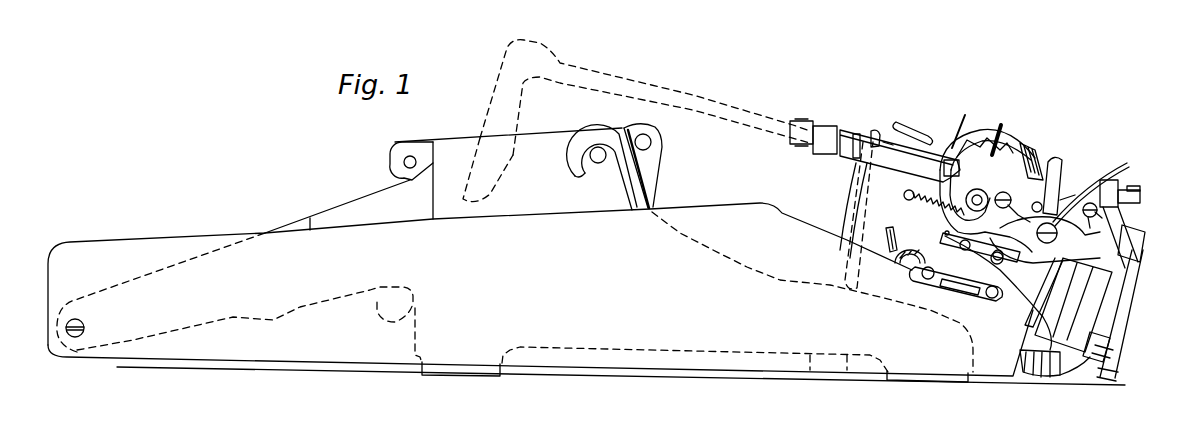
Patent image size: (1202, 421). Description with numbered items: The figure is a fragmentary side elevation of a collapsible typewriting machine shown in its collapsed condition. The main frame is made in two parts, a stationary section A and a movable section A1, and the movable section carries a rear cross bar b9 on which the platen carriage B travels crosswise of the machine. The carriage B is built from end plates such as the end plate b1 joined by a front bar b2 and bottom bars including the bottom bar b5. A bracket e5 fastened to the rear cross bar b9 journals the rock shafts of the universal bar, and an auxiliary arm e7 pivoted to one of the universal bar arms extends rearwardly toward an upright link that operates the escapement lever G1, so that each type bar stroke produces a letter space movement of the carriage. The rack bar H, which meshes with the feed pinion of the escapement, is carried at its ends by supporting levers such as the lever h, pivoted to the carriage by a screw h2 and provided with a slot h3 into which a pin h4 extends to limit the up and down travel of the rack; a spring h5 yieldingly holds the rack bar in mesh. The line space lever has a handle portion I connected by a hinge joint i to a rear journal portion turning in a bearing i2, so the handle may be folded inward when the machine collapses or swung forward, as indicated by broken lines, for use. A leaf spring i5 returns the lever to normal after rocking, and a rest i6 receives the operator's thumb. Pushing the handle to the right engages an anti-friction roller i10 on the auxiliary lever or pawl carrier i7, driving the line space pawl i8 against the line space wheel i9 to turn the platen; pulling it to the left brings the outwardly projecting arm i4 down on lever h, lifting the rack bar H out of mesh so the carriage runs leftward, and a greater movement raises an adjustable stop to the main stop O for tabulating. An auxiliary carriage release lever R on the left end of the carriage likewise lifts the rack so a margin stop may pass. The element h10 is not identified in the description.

The stationary section of the collapsible main frame A is at (463, 178).
The movable section of the collapsible main frame A1 is at (586, 294).
The line space lever handle portion I is at (700, 95).
The hinge joint i is at (812, 120).
The bearing i2 is at (931, 163).
The outwardly projecting arm i4 is at (959, 120).
The leaf spring i5 is at (889, 140).
The rest or projection i6 is at (540, 48).
The auxiliary lever or pawl carrier i7 is at (1080, 180).
The line space pawl i8 is at (1058, 162).
The line space wheel i9 is at (977, 180).
The anti-friction roller i10 is at (874, 132).
The auxiliary carriage release lever R is at (918, 130).
The rack bar supporting lever h is at (1020, 196).
The pivot screw h2 is at (1006, 187).
The slot h3 is at (1004, 219).
The limit screw or pin h4 is at (1038, 227).
The spring h5 is at (901, 208).
The pin h10 is at (1000, 133).
The escapement lever G1 is at (1089, 203).
The main stop O is at (1138, 192).
The rack bar H is at (1143, 226).
The platen carriage B is at (963, 244).
The end plate b1 is at (902, 268).
The front bar b2 is at (889, 232).
The bottom bar b5 is at (960, 292).
The rear cross bar b9 is at (1004, 293).
The bracket e5 is at (1057, 307).
The auxiliary arm e7 is at (1020, 362).